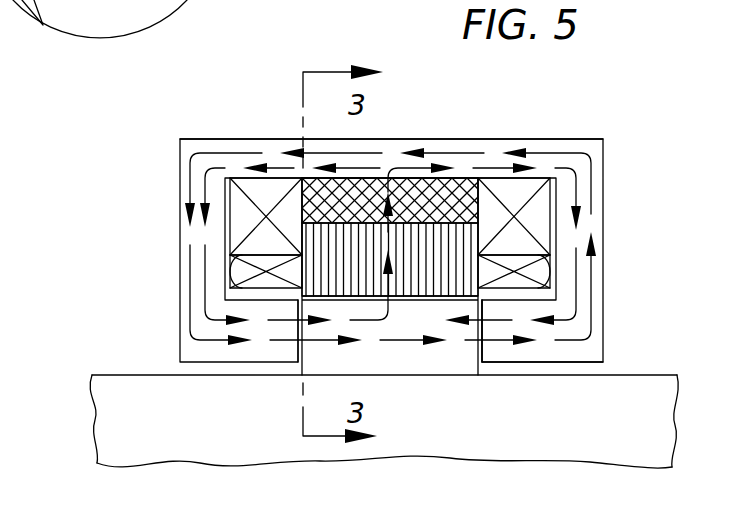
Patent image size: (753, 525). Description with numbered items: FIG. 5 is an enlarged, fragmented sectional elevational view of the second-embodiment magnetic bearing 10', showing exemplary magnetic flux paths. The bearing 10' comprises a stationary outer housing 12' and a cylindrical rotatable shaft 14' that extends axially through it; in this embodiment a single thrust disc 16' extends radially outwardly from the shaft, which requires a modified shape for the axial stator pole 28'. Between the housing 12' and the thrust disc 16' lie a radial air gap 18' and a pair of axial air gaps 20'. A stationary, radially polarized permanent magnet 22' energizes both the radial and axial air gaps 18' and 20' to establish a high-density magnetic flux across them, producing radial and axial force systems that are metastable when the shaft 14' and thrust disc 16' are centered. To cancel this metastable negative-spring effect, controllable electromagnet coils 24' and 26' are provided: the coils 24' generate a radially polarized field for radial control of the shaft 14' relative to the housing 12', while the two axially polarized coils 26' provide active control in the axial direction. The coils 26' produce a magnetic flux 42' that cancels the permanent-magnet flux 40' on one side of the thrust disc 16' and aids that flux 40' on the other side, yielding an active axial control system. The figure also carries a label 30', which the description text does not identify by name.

The magnetic bearing 10' is at (341, 233).
The stationary housing 12' is at (425, 206).
The shaft 14' is at (365, 393).
The thrust disc 16' is at (542, 354).
The radial air gap 18' is at (390, 280).
The axial air gaps 20' is at (350, 357).
The permanent magnet 22' is at (384, 144).
The electromagnet coils 24' is at (394, 275).
The electromagnet coils 26' is at (393, 219).
The axial stator pole 28' is at (391, 112).
The core winding section 30' is at (367, 192).
The magnetic flux 40' is at (390, 208).
The magnetic flux 42' is at (390, 214).